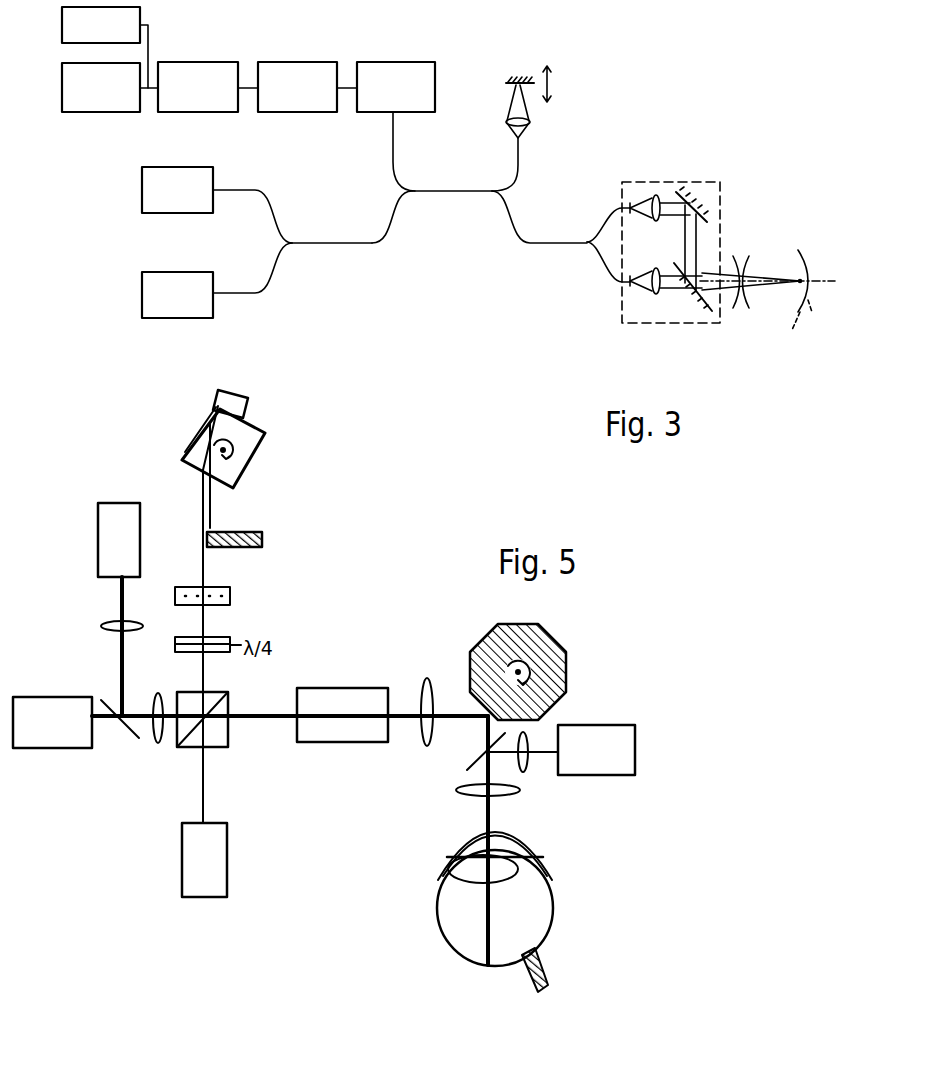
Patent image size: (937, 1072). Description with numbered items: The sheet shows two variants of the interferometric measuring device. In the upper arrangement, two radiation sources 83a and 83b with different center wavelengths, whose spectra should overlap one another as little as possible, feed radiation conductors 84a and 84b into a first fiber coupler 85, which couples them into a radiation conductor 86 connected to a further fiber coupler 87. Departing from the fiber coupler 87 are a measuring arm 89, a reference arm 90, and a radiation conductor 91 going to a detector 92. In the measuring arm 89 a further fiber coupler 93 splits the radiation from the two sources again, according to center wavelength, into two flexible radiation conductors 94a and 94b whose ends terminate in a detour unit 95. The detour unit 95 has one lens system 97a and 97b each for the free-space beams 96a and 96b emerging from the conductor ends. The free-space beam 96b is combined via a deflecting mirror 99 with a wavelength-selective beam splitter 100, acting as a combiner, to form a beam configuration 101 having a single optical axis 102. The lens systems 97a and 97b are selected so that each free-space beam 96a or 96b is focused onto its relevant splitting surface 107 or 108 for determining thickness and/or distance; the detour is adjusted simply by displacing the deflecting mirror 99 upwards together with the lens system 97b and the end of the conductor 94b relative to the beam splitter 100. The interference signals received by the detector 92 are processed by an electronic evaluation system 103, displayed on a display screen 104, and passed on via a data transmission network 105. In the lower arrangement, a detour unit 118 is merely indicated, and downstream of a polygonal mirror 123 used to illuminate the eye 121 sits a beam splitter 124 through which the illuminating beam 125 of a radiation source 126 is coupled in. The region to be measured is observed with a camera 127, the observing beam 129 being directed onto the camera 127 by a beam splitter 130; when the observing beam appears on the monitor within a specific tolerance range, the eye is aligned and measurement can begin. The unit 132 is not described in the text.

In FIG. 3, the radiation source 83a is at (195, 312).
In FIG. 3, the radiation source 83b is at (195, 207).
In FIG. 3, the radiation conductor 84a is at (242, 285).
In FIG. 3, the radiation conductor 84b is at (234, 190).
In FIG. 3, the first fiber coupler 85 is at (335, 241).
In FIG. 3, the radiation conductor 86 is at (384, 221).
In FIG. 3, the further fiber coupler 87 is at (443, 178).
In FIG. 3, the measuring arm 89 is at (613, 318).
In FIG. 3, the reference arm 90 is at (541, 133).
In FIG. 3, the radiation conductor 91 is at (393, 150).
In FIG. 3, the detector 92 is at (410, 101).
In FIG. 3, the further fiber coupler 93 is at (570, 230).
In FIG. 3, the radiation conductor 94a is at (604, 276).
In FIG. 3, the radiation conductor 94b is at (609, 230).
In FIG. 3, the detour unit 95 is at (655, 250).
In FIG. 3, the free-space beam 96a is at (666, 288).
In FIG. 3, the free-space beam 96b is at (672, 229).
In FIG. 3, the lens system 97a is at (649, 278).
In FIG. 3, the lens system 97b is at (642, 216).
In FIG. 3, the deflecting mirror 99 is at (684, 197).
In FIG. 3, the wavelength-selective beam splitter 100 is at (700, 312).
In FIG. 3, the beam configuration 101 is at (692, 278).
In FIG. 3, the optical axis 102 is at (798, 308).
In FIG. 3, the electronic evaluation system 103 is at (273, 59).
In FIG. 3, the display screen 104 is at (112, 101).
In FIG. 3, the data transmission network 105 is at (115, 37).
In FIG. 3, the splitting surface 107 is at (737, 260).
In FIG. 3, the splitting surface 108 is at (786, 258).
In FIG. 5, the detour unit 118 is at (352, 740).
In FIG. 5, the eye 121 is at (535, 924).
In FIG. 5, the polygonal mirror 123 is at (488, 640).
In FIG. 5, the beam splitter 124 is at (472, 761).
In FIG. 5, the illuminating beam 125 is at (542, 760).
In FIG. 5, the radiation source 126 is at (612, 764).
In FIG. 5, the camera 127 is at (136, 552).
In FIG. 5, the observing beam 129 is at (123, 601).
In FIG. 5, the beam splitter 130 is at (128, 740).
In FIG. 5, the light source 132 is at (62, 735).